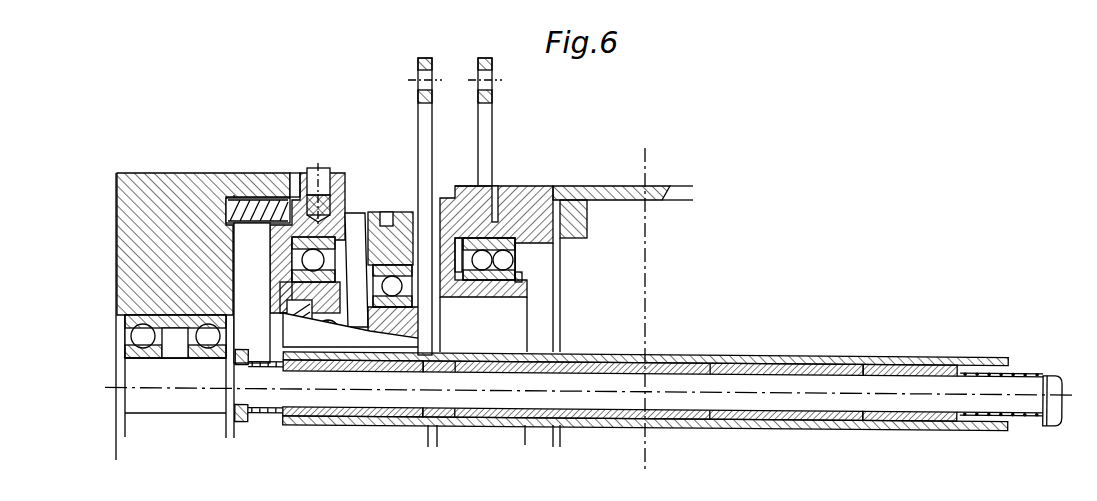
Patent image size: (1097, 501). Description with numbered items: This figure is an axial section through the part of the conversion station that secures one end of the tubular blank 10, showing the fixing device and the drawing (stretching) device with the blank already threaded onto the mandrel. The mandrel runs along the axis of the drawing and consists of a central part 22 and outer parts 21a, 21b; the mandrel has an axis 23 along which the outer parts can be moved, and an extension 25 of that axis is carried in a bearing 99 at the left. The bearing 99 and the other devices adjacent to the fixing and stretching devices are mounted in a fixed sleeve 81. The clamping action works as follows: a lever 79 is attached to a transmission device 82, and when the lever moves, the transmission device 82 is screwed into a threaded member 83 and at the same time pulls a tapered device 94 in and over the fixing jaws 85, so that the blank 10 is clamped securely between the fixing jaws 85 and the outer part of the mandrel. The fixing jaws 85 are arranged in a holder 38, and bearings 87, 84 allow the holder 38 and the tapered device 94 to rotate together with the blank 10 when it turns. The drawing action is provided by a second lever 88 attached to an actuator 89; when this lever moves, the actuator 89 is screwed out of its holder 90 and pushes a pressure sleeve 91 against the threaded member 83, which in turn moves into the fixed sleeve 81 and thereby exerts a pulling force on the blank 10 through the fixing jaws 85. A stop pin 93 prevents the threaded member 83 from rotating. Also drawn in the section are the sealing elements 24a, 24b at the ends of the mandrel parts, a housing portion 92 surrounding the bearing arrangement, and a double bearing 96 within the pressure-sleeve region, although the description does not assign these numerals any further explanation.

The blank 10 is at (779, 355).
The outer part of the mandrel 21a is at (413, 414).
The outer part of the mandrel 21b is at (901, 417).
The central part of the mandrel 22 is at (677, 413).
The mandrel axis 23 is at (856, 387).
The left seal 24a is at (273, 415).
The right seal 24b is at (1021, 373).
The extension of the mandrel axis 25 is at (193, 405).
The holder 38 is at (292, 290).
The lever 79 is at (420, 112).
The fixed sleeve 81 is at (175, 192).
The transmission device 82 is at (402, 210).
The threaded member 83 is at (293, 190).
The bearing 84 is at (370, 212).
The fixing jaws 85 is at (364, 345).
The bearing 87 is at (312, 260).
The lever 88 is at (484, 128).
The actuator 89 is at (462, 186).
The holder 90 is at (548, 190).
The pressure sleeve 91 is at (445, 200).
The housing part 92 is at (357, 192).
The stop pin 93 is at (318, 168).
The tapered device 94 is at (425, 335).
The double bearing 96 is at (507, 262).
The bearing 99 is at (124, 334).